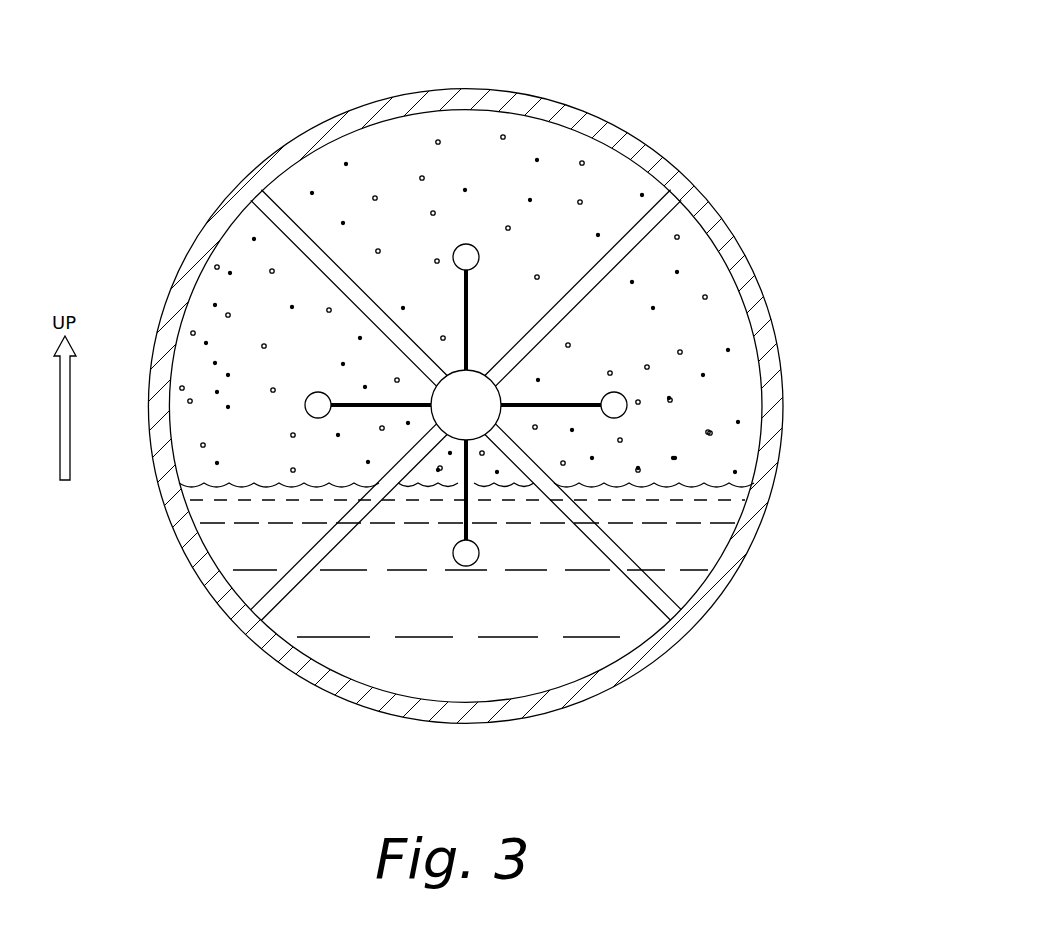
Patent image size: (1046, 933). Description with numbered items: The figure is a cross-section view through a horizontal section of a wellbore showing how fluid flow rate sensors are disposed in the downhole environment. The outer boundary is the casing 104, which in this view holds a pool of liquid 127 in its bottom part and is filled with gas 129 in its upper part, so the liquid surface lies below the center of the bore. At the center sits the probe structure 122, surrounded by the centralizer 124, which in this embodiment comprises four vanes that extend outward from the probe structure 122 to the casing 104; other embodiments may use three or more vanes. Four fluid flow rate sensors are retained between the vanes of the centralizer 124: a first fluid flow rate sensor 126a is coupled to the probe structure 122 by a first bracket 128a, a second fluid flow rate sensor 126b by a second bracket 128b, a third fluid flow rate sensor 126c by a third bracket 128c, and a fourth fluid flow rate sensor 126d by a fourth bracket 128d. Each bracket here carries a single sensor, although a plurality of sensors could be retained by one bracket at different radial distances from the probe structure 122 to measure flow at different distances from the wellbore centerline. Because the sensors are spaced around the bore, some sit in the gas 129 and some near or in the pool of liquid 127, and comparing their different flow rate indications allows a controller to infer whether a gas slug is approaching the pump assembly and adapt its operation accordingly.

The casing 104 is at (713, 223).
The probe structure 122 is at (468, 393).
The centralizer 124 is at (627, 230).
The first fluid flow rate sensor 126a is at (473, 246).
The second fluid flow rate sensor 126b is at (623, 415).
The third fluid flow rate sensor 126c is at (452, 551).
The fourth fluid flow rate sensor 126d is at (318, 392).
The pool of liquid 127 is at (708, 483).
The first bracket 128a is at (465, 307).
The second bracket 128b is at (575, 403).
The third bracket 128c is at (468, 508).
The fourth bracket 128d is at (355, 407).
The gas 129 is at (228, 404).